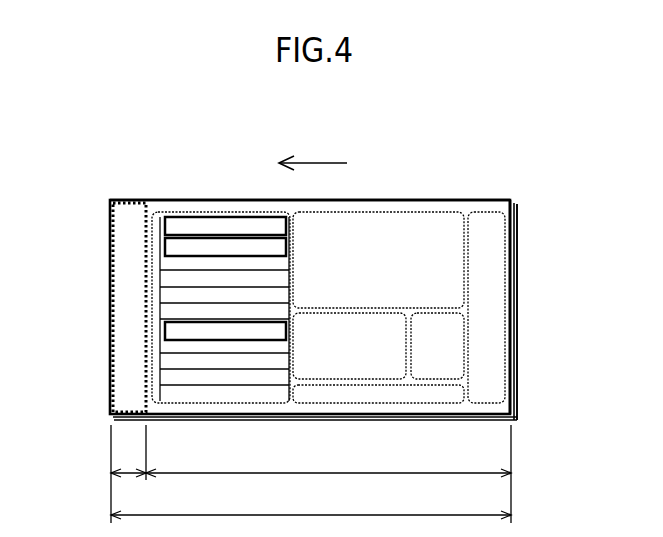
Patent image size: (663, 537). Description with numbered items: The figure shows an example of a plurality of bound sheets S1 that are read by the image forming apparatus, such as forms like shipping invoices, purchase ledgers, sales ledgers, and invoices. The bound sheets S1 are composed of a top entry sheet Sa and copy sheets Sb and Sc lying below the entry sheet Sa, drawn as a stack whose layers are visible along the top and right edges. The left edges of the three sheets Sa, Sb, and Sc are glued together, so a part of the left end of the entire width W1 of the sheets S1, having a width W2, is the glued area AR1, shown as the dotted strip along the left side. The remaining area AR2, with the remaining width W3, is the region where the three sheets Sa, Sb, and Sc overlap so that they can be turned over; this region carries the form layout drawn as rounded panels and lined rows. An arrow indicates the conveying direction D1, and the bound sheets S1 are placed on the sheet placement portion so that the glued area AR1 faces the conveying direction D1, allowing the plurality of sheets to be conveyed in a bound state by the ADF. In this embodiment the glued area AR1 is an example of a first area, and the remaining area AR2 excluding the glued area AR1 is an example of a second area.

The sheets S1 is at (85, 206).
The entry sheet Sa is at (498, 198).
The copy sheet Sb is at (513, 203).
The copy sheet Sc is at (518, 208).
The glued area AR1 is at (126, 200).
The remaining area AR2 is at (235, 205).
The conveying direction D1 is at (313, 152).
The entire width W1 is at (311, 505).
The width of glued area W2 is at (128, 474).
The remaining width W3 is at (328, 474).